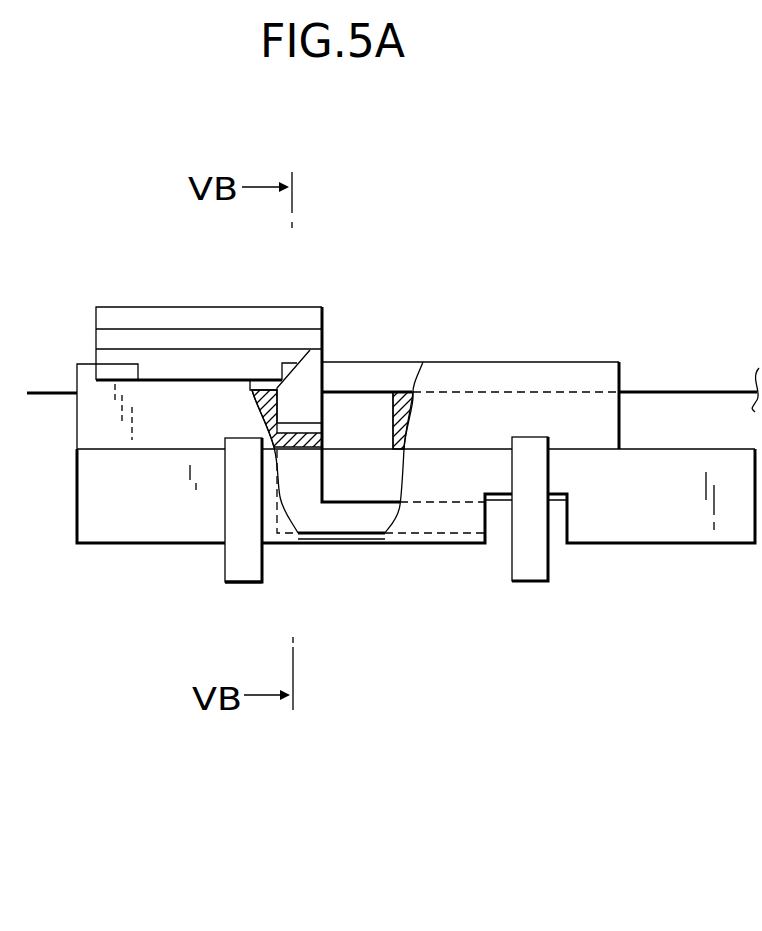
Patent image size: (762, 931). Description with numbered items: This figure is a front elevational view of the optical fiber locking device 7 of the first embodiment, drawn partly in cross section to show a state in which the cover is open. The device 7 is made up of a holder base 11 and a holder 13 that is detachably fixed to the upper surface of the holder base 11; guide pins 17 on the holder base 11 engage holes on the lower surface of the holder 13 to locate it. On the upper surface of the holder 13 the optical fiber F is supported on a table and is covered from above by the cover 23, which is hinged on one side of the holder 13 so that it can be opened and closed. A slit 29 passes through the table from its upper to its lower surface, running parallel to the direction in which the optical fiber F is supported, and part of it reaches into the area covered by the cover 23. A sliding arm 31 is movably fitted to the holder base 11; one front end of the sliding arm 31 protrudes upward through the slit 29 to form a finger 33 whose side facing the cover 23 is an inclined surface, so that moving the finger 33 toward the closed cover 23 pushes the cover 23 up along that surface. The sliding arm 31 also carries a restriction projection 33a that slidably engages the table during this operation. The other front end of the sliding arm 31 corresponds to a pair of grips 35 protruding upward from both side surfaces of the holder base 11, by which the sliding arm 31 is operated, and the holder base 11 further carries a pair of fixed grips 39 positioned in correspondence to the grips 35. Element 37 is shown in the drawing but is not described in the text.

The optical fiber locking device 7 is at (345, 249).
The holder base 11 is at (112, 547).
The holder 13 is at (77, 432).
The guide pins 17 is at (0, 572).
The optical fiber F is at (46, 390).
The cover 23 is at (141, 307).
The slit 29 is at (394, 420).
The sliding arm 31 is at (342, 544).
The finger 33 is at (300, 350).
The restriction projection 33a is at (325, 420).
The grips 35 is at (530, 582).
The step portion 37 is at (244, 586).
The fixed grips 39 is at (225, 555).